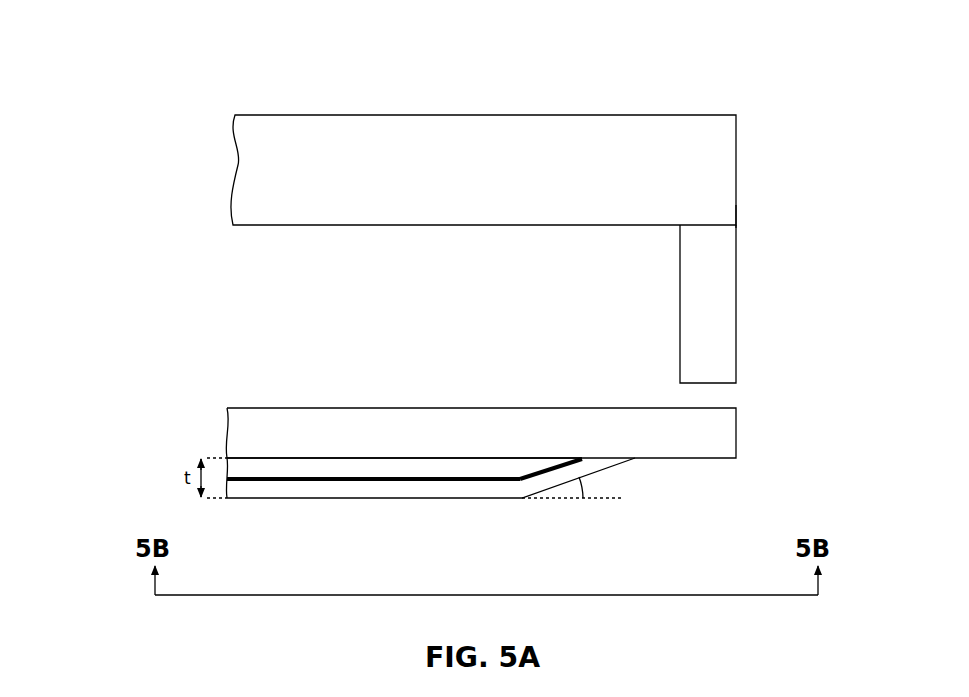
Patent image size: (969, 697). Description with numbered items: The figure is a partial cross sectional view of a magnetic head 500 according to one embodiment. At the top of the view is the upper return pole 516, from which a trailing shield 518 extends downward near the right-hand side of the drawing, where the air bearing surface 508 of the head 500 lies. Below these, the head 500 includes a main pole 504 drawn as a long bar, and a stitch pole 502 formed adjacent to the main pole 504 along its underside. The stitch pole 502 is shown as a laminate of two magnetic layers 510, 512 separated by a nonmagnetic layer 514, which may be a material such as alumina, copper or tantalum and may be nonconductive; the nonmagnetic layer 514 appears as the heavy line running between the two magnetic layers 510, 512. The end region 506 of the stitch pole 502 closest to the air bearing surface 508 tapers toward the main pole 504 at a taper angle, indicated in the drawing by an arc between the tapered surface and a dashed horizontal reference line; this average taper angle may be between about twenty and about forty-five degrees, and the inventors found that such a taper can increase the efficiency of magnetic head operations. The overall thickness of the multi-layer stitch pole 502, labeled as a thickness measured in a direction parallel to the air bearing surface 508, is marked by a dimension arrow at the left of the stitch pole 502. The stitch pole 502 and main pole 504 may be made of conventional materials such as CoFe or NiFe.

The magnetic head 500 is at (128, 74).
The stitch pole 502 is at (128, 472).
The main pole 504 is at (507, 444).
The end region 506 is at (614, 523).
The air bearing surface 508 is at (740, 207).
The magnetic layer 510 is at (395, 499).
The magnetic layer 512 is at (224, 457).
The nonmagnetic layer 514 is at (462, 481).
The upper return pole 516 is at (504, 182).
The trailing shield 518 is at (680, 300).